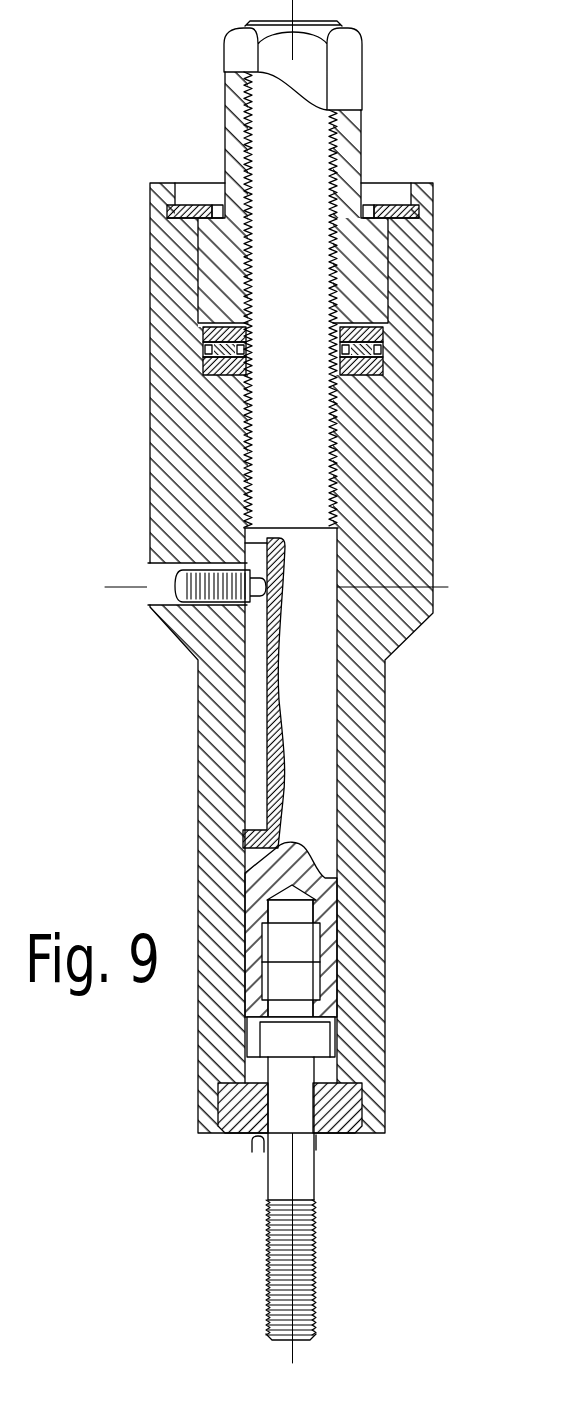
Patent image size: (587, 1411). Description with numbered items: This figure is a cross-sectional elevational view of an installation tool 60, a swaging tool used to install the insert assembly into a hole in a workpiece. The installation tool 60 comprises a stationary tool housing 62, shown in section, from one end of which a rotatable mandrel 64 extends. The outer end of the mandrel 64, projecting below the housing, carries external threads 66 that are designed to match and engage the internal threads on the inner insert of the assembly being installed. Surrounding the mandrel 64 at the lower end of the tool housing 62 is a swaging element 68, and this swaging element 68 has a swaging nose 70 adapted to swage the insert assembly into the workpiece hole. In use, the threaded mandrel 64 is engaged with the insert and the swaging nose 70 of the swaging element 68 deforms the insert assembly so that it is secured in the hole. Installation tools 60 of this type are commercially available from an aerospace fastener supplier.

The installation tool 60 is at (328, 681).
The tool housing 62 is at (433, 485).
The mandrel 64 is at (315, 1182).
The external threads 66 is at (315, 1272).
The swaging element 68 is at (238, 1135).
The swaging nose 70 is at (251, 1152).